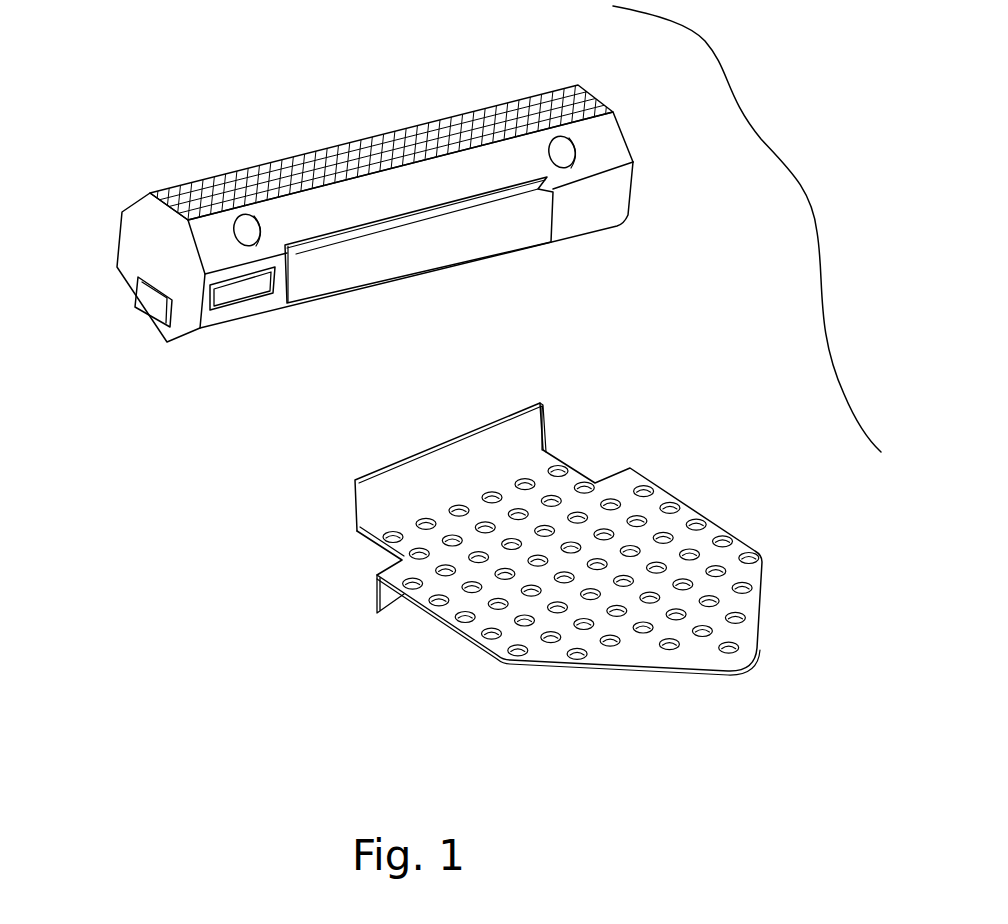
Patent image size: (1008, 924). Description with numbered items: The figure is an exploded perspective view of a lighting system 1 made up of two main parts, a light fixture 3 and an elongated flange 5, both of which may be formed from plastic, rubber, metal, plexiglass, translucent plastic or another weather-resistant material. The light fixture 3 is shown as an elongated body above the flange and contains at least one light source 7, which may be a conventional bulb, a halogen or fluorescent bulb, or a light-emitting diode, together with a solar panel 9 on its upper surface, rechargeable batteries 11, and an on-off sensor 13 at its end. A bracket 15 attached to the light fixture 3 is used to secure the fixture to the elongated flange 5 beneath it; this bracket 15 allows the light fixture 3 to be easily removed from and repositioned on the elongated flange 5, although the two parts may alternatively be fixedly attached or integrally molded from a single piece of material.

The lighting system 1 is at (747, 229).
The light fixture 3 is at (157, 238).
The elongated flange 5 is at (546, 652).
The light source 7 is at (260, 216).
The solar panel 9 is at (322, 170).
The rechargeable batteries 11 is at (242, 290).
The on-off sensor 13 is at (152, 303).
The bracket 15 is at (353, 258).